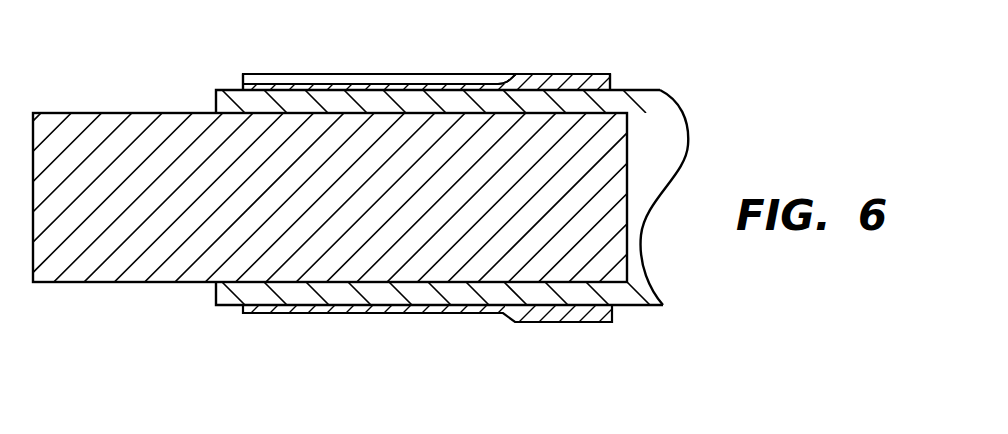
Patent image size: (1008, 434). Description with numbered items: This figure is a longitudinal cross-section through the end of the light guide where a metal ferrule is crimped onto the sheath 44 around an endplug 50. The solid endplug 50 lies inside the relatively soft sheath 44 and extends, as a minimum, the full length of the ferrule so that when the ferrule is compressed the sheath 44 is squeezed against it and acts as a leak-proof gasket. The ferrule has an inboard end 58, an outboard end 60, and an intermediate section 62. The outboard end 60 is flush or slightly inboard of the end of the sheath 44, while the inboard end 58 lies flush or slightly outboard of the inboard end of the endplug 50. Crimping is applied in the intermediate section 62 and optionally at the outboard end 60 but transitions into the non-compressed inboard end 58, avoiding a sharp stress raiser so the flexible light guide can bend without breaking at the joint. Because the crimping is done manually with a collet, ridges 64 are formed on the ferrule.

The sheath 44 is at (216, 104).
The endplug 50 is at (167, 282).
The inboard end 58 is at (613, 88).
The outboard end 60 is at (242, 87).
The intermediate section 62 is at (407, 84).
The ridges 64 is at (330, 74).